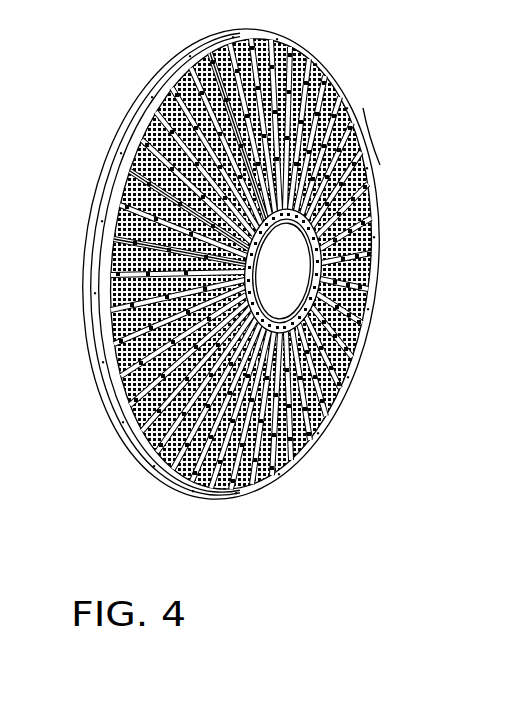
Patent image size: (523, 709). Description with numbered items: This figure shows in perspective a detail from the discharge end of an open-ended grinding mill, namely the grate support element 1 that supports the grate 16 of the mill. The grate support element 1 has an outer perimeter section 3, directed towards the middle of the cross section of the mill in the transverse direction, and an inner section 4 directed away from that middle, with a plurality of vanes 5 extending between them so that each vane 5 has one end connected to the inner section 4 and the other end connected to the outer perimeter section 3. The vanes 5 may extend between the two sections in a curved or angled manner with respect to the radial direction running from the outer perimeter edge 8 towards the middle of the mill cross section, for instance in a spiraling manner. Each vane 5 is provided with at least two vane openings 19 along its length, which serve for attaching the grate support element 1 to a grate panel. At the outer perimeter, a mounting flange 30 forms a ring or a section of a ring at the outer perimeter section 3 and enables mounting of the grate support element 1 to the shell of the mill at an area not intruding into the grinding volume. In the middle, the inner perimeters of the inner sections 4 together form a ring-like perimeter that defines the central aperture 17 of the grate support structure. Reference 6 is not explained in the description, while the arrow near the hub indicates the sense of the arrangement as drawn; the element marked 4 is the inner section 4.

The grate support element 1 is at (263, 44).
The outer perimeter section 3 is at (340, 107).
The inner section 4 is at (293, 243).
The vane 5 is at (350, 195).
The rim edge 6 is at (368, 159).
The outer perimeter edge 8 is at (367, 238).
The grate 16 is at (110, 230).
The aperture 17 is at (122, 190).
The vane opening 19 is at (358, 250).
The mounting flange 30 is at (160, 97).